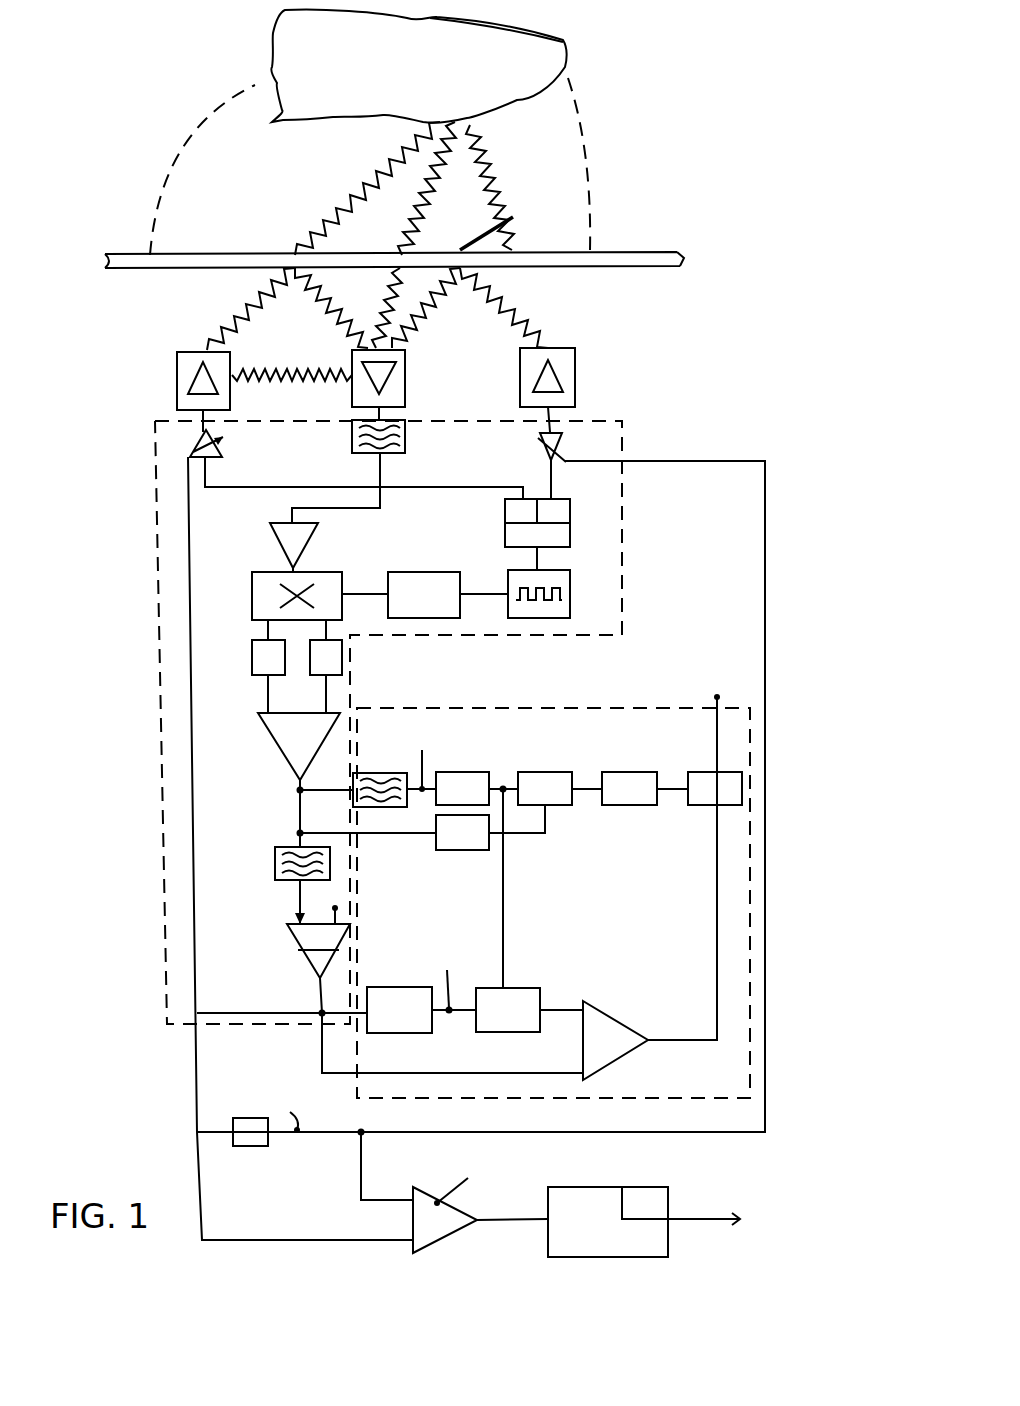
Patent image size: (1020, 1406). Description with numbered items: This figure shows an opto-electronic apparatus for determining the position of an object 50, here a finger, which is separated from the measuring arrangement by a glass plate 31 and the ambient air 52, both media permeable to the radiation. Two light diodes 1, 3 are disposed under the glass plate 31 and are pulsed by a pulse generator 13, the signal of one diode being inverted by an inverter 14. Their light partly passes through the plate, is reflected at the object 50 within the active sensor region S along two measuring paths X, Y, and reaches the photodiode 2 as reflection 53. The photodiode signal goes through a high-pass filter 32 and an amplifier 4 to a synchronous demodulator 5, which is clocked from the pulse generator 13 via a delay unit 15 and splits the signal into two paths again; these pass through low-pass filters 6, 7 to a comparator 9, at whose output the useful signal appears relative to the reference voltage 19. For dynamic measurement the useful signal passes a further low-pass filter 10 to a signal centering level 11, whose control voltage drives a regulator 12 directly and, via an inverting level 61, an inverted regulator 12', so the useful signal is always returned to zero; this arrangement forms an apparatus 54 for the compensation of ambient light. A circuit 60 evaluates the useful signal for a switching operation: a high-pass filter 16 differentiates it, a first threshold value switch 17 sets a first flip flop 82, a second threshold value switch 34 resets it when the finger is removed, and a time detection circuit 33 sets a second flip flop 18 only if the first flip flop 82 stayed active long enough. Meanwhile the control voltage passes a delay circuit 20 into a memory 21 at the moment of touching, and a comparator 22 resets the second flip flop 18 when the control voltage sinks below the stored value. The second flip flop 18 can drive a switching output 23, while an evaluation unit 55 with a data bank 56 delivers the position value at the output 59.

The light diode 1 is at (567, 367).
The photodiode 2 is at (400, 393).
The light diode 3 is at (182, 358).
The amplifier 4 is at (295, 545).
The synchronous demodulator 5 is at (262, 578).
The low-pass filter 6 is at (262, 655).
The low-pass filter 7 is at (333, 665).
The comparator 9 is at (280, 735).
The low-pass filter 10 is at (280, 855).
The signal centering level 11 is at (390, 998).
The regulator 12 is at (308, 829).
The regulator 12' is at (481, 782).
The pulse generator 13 is at (563, 607).
The inverter 14 is at (560, 535).
The delay unit 15 is at (448, 595).
The high-pass filter 16 is at (388, 782).
The first threshold value switch 17 is at (477, 880).
The second flip flop 18 is at (715, 788).
The reference voltage 19 is at (340, 906).
The delay circuit 20 is at (430, 989).
The memory 21 is at (529, 1010).
The comparator 22 is at (650, 888).
The switching output 23 is at (712, 697).
The glass plate 31 is at (150, 262).
The high-pass filter 32 is at (398, 450).
The time detection circuit 33 is at (645, 788).
The second threshold value switch 34 is at (523, 827).
The object 50 is at (260, 68).
The ambient air 52 is at (664, 105).
The reflection 53 is at (432, 215).
The apparatus for the compensation of ambient light 54 is at (605, 425).
The evaluation unit 55 is at (588, 1190).
The data bank 56 is at (655, 1210).
The output 59 is at (723, 1221).
The circuit 60 is at (655, 911).
The inverting level 61 is at (253, 1146).
The first flip flop 82 is at (545, 780).
The active sensor region S is at (580, 218).
The measuring path X is at (398, 225).
The measuring path Y is at (470, 160).